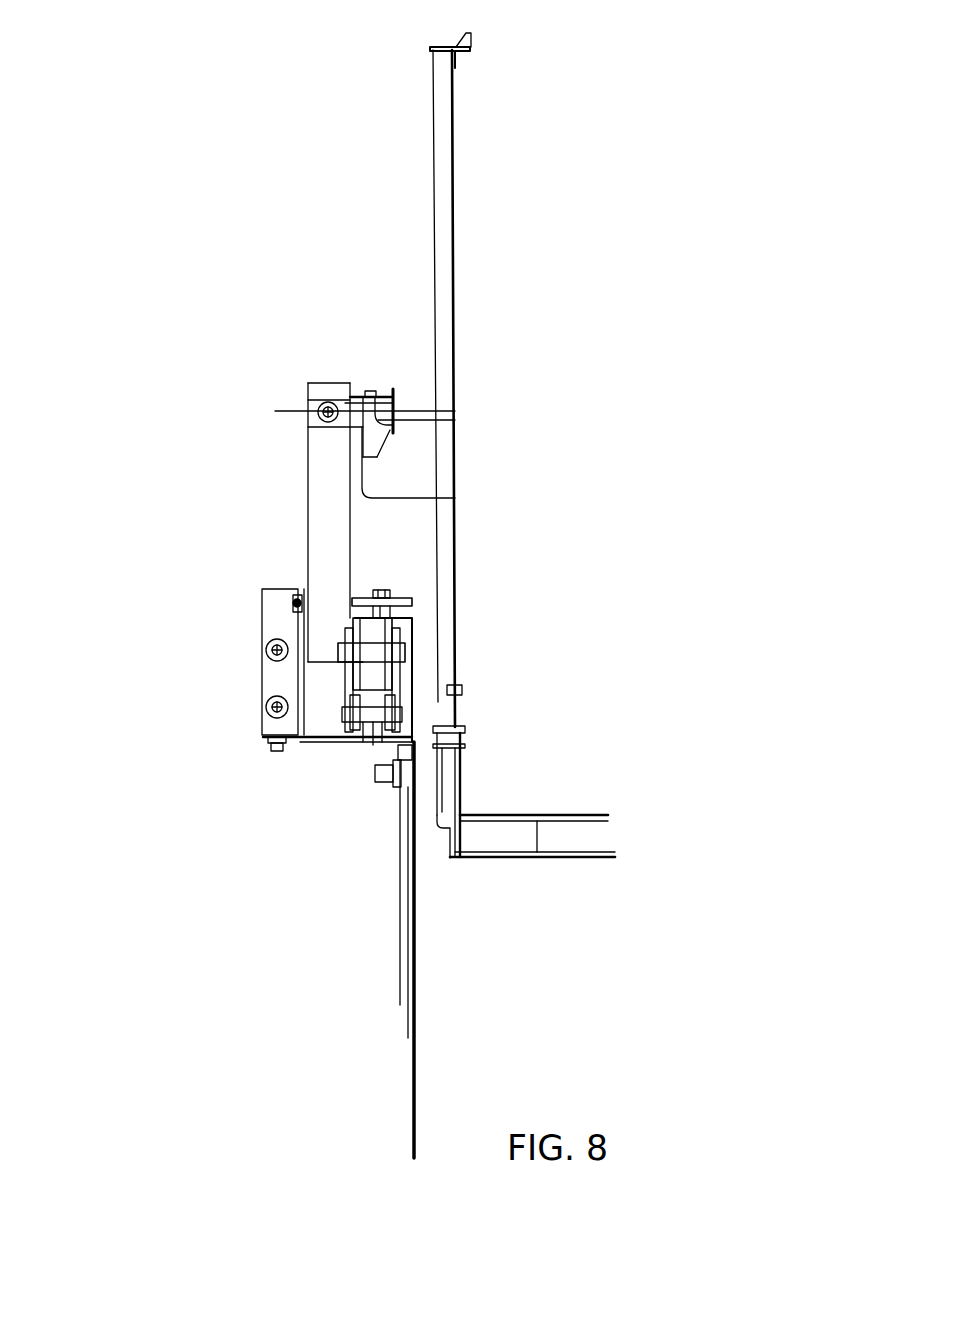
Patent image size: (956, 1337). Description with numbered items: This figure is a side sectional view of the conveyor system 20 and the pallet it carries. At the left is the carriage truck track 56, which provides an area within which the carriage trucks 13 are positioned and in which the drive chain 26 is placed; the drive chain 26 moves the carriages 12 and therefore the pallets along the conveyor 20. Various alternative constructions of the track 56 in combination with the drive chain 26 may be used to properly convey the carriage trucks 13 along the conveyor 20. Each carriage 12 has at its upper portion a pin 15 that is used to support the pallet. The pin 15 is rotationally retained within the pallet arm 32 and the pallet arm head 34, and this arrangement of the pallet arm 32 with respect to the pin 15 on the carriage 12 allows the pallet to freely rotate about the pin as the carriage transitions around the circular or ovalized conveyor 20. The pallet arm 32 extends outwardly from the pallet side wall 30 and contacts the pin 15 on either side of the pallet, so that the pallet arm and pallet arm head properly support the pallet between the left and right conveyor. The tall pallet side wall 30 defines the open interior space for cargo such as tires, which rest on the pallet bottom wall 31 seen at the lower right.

The carriage 12 is at (311, 511).
The carriage truck 13 is at (400, 677).
The pin 15 is at (398, 396).
The conveyor system 20 is at (228, 783).
The drive chain 26 is at (372, 733).
The pallet side wall 30 is at (445, 145).
The pallet bottom wall 31 is at (575, 815).
The pallet arm 32 is at (420, 497).
The pallet arm head 34 is at (370, 394).
The carriage truck track 56 is at (322, 712).